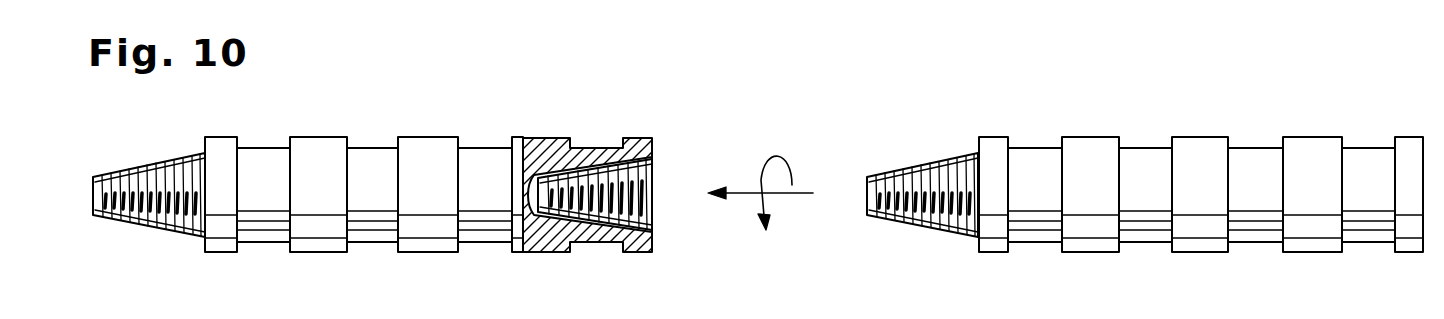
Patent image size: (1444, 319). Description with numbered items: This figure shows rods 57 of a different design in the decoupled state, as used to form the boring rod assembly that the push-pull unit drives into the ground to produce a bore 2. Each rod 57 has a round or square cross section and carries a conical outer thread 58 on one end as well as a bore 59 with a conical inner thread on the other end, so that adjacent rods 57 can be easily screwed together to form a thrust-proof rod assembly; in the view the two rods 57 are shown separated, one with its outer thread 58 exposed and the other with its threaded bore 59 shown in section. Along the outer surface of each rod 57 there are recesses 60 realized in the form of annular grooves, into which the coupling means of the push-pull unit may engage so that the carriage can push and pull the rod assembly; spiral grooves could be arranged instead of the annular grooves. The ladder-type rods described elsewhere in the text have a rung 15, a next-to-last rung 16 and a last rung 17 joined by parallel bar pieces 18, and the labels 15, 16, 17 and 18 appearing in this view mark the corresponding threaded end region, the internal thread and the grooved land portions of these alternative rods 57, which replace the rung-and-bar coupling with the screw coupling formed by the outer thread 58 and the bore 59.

The bore 2 is at (814, 196).
The rung 15 is at (152, 168).
The next-to-last rung 16 is at (598, 167).
The last rung 17 is at (1142, 148).
The parallel bar pieces 18 is at (1280, 148).
The rod 57 is at (758, 183).
The conical outer thread 58 is at (535, 161).
The bore 59 is at (587, 169).
The recesses 60 is at (487, 148).